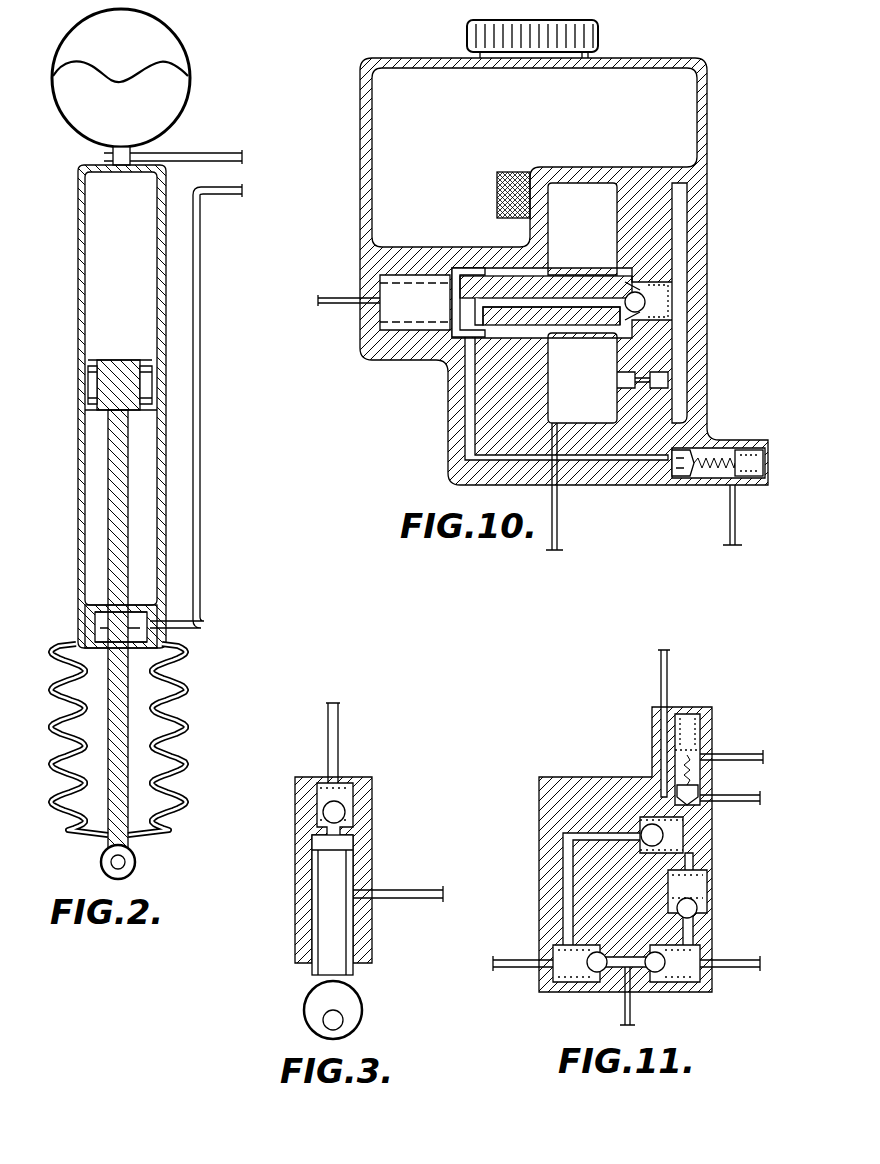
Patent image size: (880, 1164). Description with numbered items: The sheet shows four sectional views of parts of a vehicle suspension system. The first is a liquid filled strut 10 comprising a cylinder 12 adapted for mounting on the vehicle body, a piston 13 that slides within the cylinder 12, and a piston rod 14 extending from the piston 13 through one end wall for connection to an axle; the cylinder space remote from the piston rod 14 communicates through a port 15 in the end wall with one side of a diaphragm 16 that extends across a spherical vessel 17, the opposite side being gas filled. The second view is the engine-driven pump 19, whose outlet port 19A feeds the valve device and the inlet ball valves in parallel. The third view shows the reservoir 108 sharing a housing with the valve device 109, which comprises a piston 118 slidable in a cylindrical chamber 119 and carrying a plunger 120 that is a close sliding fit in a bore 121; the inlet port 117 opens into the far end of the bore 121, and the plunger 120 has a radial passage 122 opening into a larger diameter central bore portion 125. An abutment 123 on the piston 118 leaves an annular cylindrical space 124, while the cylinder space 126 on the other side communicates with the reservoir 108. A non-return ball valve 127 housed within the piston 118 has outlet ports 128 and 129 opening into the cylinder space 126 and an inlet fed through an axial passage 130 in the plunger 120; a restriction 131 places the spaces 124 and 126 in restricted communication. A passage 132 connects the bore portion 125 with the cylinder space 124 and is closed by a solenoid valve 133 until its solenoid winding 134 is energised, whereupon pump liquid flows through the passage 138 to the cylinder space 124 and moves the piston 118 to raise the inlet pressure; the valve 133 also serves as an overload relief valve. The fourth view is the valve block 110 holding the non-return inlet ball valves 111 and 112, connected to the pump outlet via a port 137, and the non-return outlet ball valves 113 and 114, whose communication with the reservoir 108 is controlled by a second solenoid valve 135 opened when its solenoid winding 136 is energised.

In FIG. 2, the liquid filled strut 10 is at (168, 336).
In FIG. 2, the cylinder 12 is at (79, 520).
In FIG. 2, the piston 13 is at (115, 380).
In FIG. 2, the piston rod 14 is at (118, 556).
In FIG. 2, the port 15 is at (104, 157).
In FIG. 2, the diaphragm 16 is at (176, 65).
In FIG. 2, the spherical vessel 17 is at (170, 31).
In FIG. 3, the pump 19 is at (294, 892).
In FIG. 3, the outlet port of the pump 19A is at (341, 788).
In FIG. 10, the reservoir 108 is at (412, 88).
In FIG. 10, the valve device 109 is at (657, 231).
In FIG. 11, the valve block 110 is at (565, 820).
In FIG. 11, the non-return inlet ball valve 111 is at (595, 985).
In FIG. 11, the non-return inlet ball valve 112 is at (665, 982).
In FIG. 11, the non-return outlet ball valve 113 is at (650, 828).
In FIG. 11, the non-return outlet ball valve 114 is at (692, 915).
In FIG. 10, the inlet port 117 is at (360, 306).
In FIG. 10, the piston 118 is at (638, 205).
In FIG. 10, the cylindrical chamber 119 is at (680, 195).
In FIG. 10, the plunger 120 is at (520, 282).
In FIG. 10, the bore 121 is at (406, 290).
In FIG. 10, the radial passage 122 is at (391, 313).
In FIG. 10, the abutment 123 is at (648, 302).
In FIG. 10, the cylindrical space 124 is at (682, 356).
In FIG. 10, the larger diameter central bore portion 125 is at (467, 280).
In FIG. 10, the cylinder space 126 is at (569, 195).
In FIG. 10, the non-return type ball valve 127 is at (646, 312).
In FIG. 10, the outlet port 128 is at (642, 286).
In FIG. 10, the outlet port 129 is at (630, 337).
In FIG. 10, the axial passage 130 is at (592, 304).
In FIG. 10, the restriction 131 is at (640, 382).
In FIG. 10, the passage 132 is at (467, 410).
In FIG. 10, the solenoid valve 133 is at (672, 485).
In FIG. 10, the solenoid winding 134 is at (718, 480).
In FIG. 11, the second solenoid valve 135 is at (700, 805).
In FIG. 11, the solenoid winding 136 is at (712, 772).
In FIG. 11, the port 137 is at (632, 985).
In FIG. 10, the passage 138 is at (689, 436).